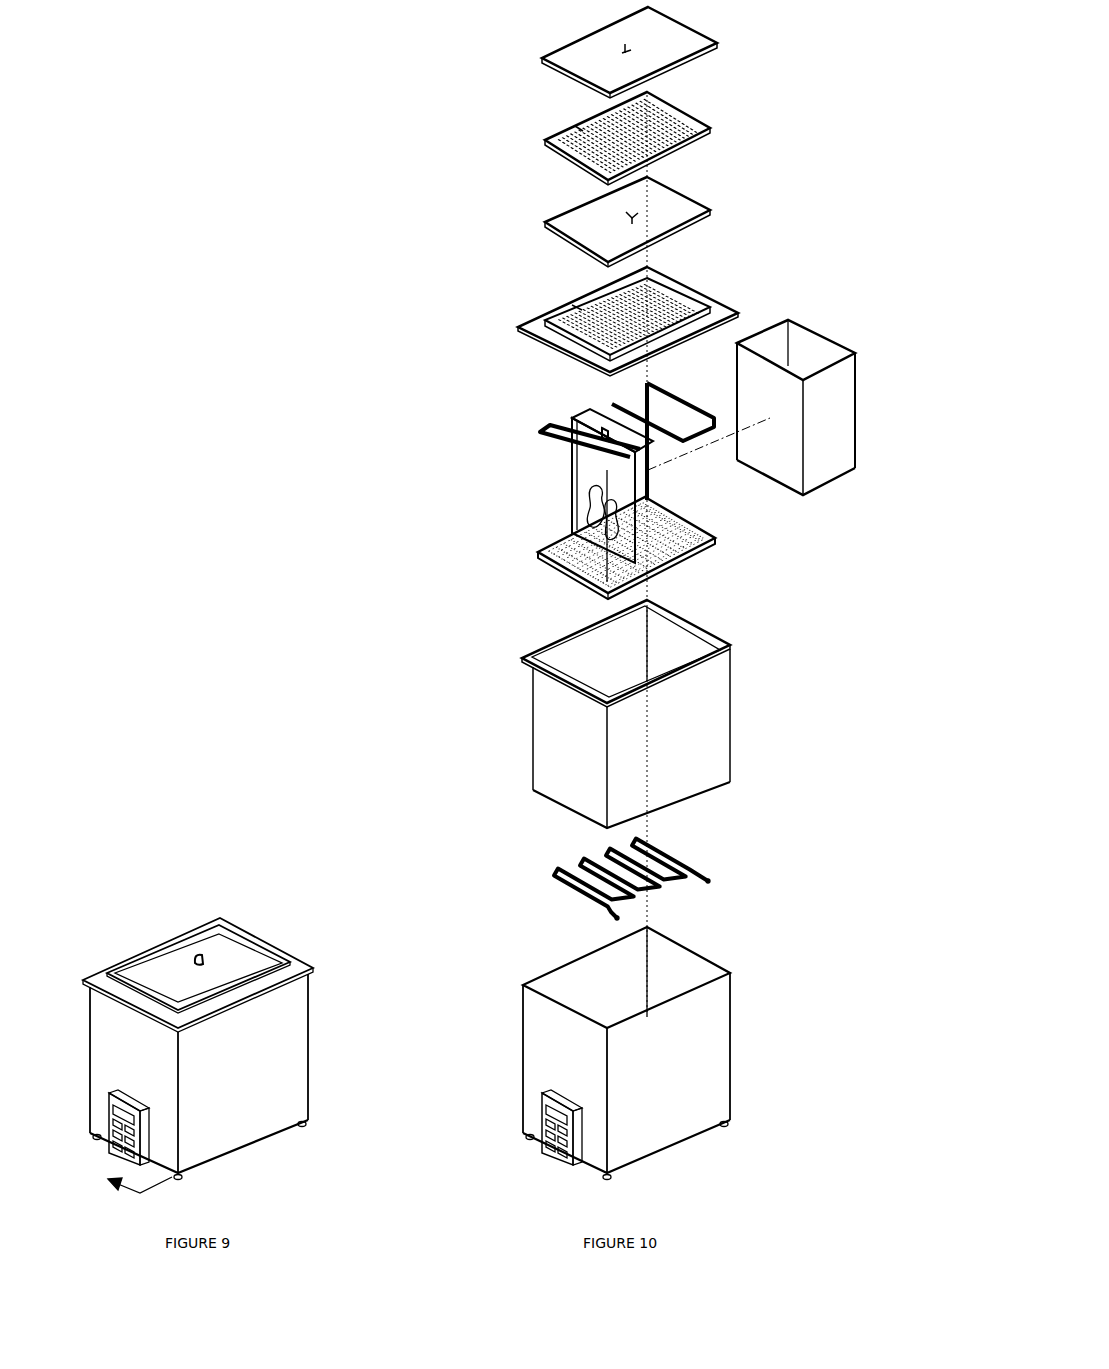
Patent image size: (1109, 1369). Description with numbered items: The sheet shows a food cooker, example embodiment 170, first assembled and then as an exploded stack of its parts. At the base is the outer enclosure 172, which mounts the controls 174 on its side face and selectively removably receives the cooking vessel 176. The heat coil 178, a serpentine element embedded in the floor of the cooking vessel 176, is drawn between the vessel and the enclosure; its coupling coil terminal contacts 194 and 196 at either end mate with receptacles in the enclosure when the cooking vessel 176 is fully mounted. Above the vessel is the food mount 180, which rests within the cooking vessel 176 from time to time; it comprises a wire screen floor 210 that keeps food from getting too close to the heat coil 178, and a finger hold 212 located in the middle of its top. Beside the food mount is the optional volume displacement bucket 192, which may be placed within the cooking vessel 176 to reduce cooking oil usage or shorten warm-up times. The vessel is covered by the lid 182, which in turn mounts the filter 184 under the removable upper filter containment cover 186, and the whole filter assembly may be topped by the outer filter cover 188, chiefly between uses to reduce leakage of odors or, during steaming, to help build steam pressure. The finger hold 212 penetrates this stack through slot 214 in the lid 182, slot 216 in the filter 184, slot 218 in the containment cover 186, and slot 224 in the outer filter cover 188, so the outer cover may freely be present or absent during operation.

In FIG. 10, the example embodiment 170 is at (778, 111).
In FIG. 9, the example embodiment 170 is at (268, 904).
In FIG. 10, the outer enclosure 172 is at (690, 1047).
In FIG. 9, the outer enclosure 172 is at (282, 1007).
In FIG. 10, the controls 174 is at (545, 1128).
In FIG. 9, the controls 174 is at (127, 1138).
In FIG. 10, the cooking vessel 176 is at (663, 737).
In FIG. 10, the heat coil 178 is at (651, 868).
In FIG. 10, the food mount 180 is at (530, 491).
In FIG. 10, the lid 182 is at (557, 333).
In FIG. 10, the filter 184 is at (598, 210).
In FIG. 10, the removable upper filter containment cover 186 is at (578, 130).
In FIG. 10, the outer filter cover 188 is at (580, 58).
In FIG. 9, the outer filter cover 188 is at (173, 958).
In FIG. 10, the optional volume displacement bucket 192 is at (823, 457).
In FIG. 10, the coupling coil terminal contact 194 is at (614, 917).
In FIG. 10, the coupling coil terminal contact 196 is at (710, 881).
In FIG. 10, the wire screen floor 210 is at (570, 552).
In FIG. 10, the finger hold 212 is at (592, 406).
In FIG. 9, the finger hold 212 is at (201, 956).
In FIG. 10, the slot 214 is at (578, 307).
In FIG. 10, the slot 216 is at (630, 219).
In FIG. 10, the slot 218 is at (578, 128).
In FIG. 10, the slot 224 is at (628, 50).